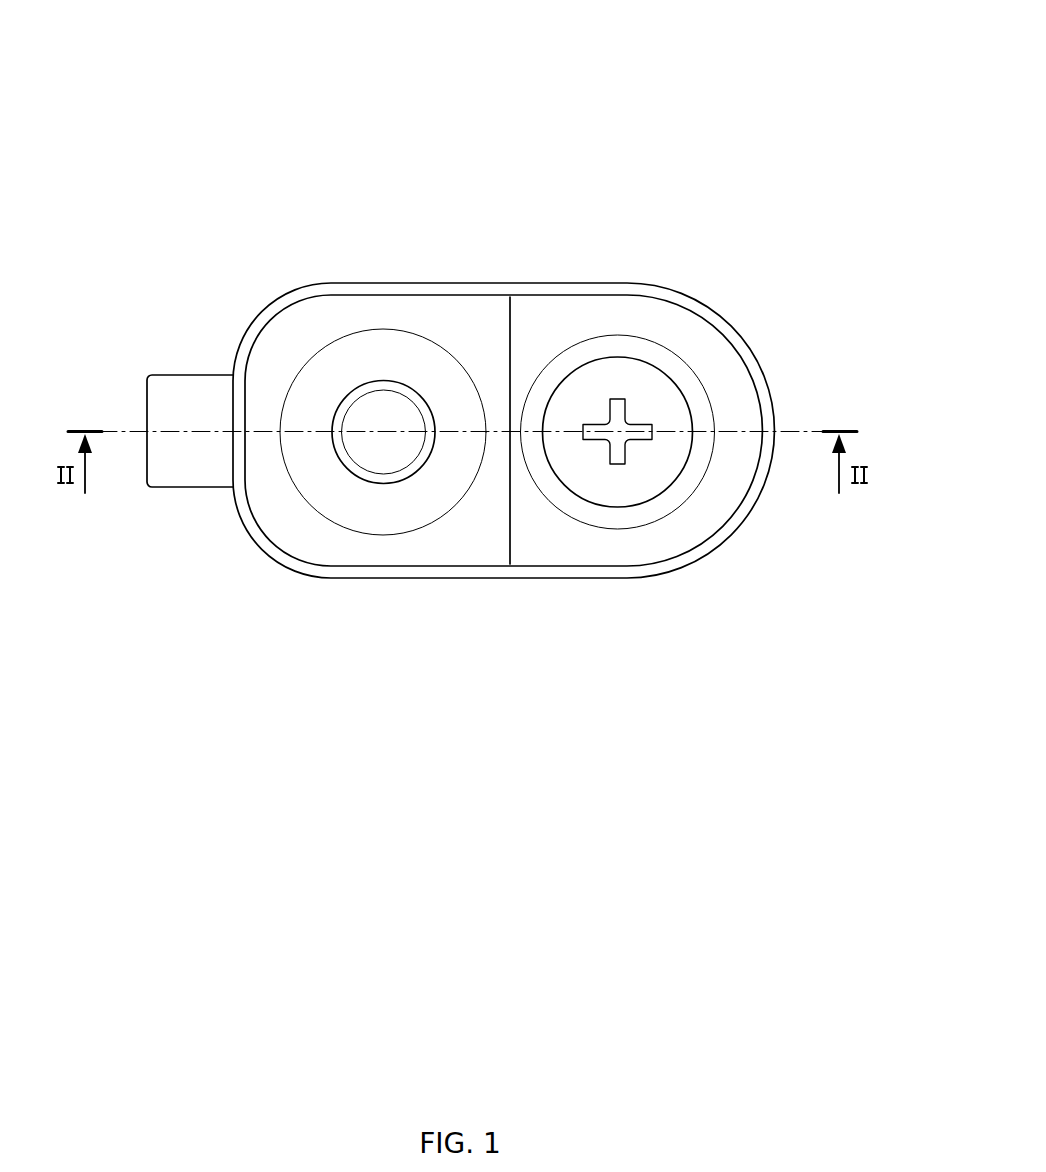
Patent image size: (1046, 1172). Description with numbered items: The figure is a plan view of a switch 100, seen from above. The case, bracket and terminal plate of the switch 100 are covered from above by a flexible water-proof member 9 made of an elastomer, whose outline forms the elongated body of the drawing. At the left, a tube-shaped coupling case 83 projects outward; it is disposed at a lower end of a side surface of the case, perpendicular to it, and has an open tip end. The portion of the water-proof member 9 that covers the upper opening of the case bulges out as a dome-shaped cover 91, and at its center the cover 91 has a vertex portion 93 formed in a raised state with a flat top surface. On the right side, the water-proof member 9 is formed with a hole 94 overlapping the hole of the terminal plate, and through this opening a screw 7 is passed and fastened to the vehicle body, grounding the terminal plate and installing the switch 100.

The switch 100 is at (654, 99).
The water-proof member 9 is at (408, 317).
The coupling case 83 is at (178, 403).
The cover 91 is at (373, 517).
The vertex portion 93 is at (370, 412).
The screw 7 is at (617, 487).
The hole 94 is at (655, 340).